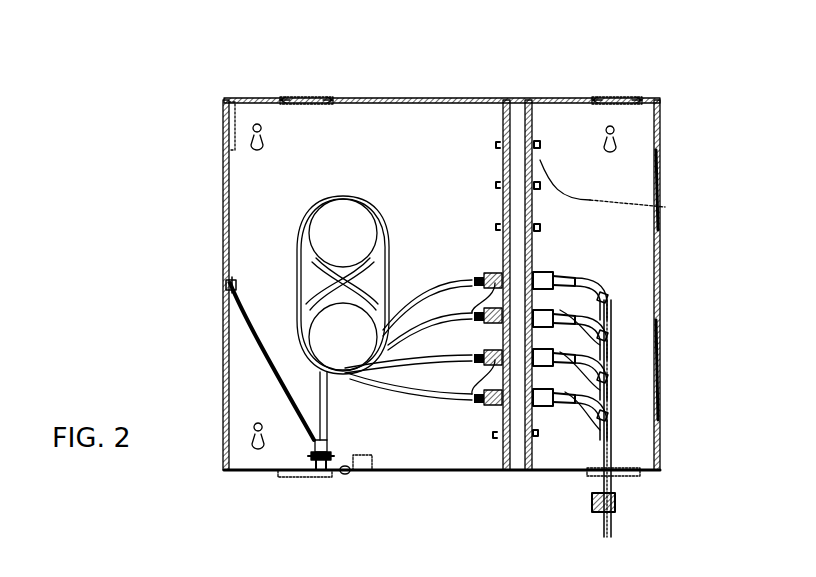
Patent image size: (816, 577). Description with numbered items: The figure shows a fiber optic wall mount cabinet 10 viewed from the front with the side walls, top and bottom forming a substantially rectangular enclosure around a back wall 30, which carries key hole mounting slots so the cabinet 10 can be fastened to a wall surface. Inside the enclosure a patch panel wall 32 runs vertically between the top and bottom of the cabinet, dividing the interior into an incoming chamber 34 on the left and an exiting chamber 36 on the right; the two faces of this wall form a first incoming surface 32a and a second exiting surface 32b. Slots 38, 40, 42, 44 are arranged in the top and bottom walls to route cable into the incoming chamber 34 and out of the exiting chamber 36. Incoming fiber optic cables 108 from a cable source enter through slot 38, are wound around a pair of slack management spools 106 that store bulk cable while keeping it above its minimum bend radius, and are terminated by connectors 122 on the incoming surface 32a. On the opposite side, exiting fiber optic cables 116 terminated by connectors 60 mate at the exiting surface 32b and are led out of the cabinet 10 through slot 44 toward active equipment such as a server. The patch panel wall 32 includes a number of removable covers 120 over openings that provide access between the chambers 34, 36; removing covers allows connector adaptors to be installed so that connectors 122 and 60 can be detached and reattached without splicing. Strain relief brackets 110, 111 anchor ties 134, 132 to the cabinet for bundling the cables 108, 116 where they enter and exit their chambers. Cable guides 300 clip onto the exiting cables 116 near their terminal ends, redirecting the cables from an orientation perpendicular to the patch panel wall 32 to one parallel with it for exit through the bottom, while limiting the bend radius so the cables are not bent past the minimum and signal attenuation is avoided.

The fiber optic wall mount cabinet 10 is at (262, 92).
The back wall 30 is at (397, 150).
The patch panel wall 32 is at (515, 473).
The first incoming surface 32a is at (500, 463).
The second exiting surface 32b is at (540, 474).
The incoming chamber 34 is at (337, 150).
The exiting chamber 36 is at (630, 165).
The slot 38 is at (300, 478).
The slot 40 is at (307, 96).
The slot 42 is at (622, 96).
The slot 44 is at (627, 476).
The connector 60 is at (555, 312).
The slack management spool 106 is at (312, 230).
The incoming fiber optic cable 108 is at (330, 413).
The strain relief bracket 110 is at (372, 472).
The strain relief bracket 111 is at (598, 476).
The exiting fiber optic cable 116 is at (608, 324).
The removable cover 120 is at (468, 447).
The connector 122 is at (455, 283).
The tie 132 is at (618, 507).
The tie 134 is at (310, 456).
The cable guide 300 is at (590, 343).